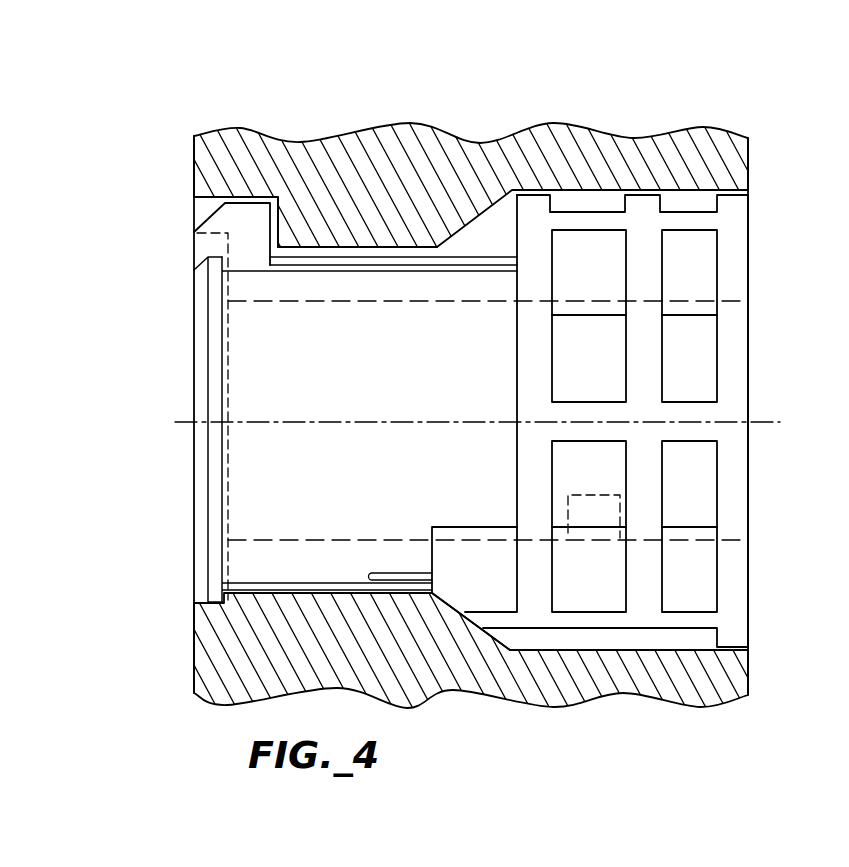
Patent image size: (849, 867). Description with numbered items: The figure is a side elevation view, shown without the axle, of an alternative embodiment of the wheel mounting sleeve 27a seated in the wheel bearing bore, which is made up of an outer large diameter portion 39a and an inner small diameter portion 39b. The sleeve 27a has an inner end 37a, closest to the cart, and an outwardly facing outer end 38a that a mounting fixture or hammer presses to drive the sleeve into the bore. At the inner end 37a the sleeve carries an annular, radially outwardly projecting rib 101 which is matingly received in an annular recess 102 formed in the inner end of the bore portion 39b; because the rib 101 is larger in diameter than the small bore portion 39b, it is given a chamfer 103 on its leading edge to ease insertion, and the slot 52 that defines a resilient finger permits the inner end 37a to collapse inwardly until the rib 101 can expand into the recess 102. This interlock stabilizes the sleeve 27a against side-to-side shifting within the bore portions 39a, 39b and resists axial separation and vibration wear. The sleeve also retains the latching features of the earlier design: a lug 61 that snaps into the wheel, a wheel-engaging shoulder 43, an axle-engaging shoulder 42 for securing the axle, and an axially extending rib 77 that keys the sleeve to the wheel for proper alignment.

The sleeve 27a is at (755, 257).
The inner end 37a is at (194, 377).
The outer end 38a is at (748, 378).
The outer large diameter portion 39a is at (589, 205).
The inner small diameter portion 39b is at (283, 301).
The axle-engaging shoulder 42 is at (612, 495).
The wheel-engaging shoulder 43 is at (277, 215).
The slot 52 is at (447, 264).
The lug 61 is at (248, 227).
The rib 77 is at (465, 600).
The annular rib 101 is at (240, 617).
The annular recess 102 is at (210, 235).
The chamfer 103 is at (200, 313).